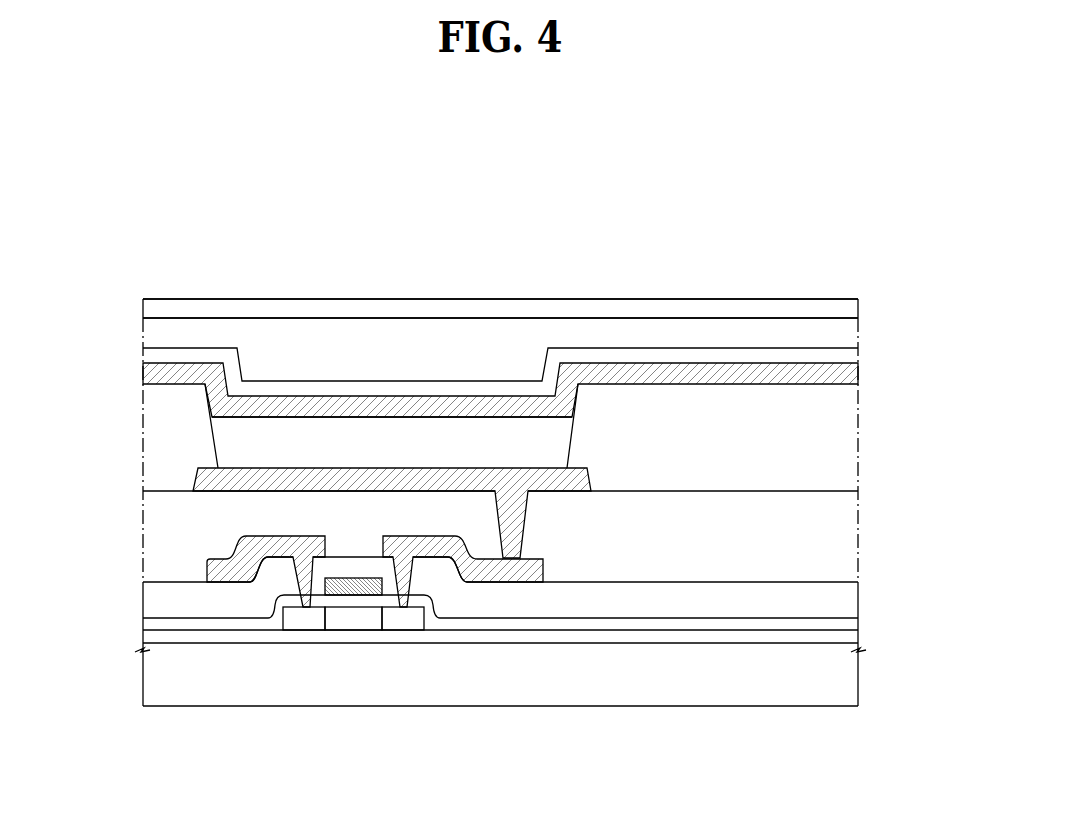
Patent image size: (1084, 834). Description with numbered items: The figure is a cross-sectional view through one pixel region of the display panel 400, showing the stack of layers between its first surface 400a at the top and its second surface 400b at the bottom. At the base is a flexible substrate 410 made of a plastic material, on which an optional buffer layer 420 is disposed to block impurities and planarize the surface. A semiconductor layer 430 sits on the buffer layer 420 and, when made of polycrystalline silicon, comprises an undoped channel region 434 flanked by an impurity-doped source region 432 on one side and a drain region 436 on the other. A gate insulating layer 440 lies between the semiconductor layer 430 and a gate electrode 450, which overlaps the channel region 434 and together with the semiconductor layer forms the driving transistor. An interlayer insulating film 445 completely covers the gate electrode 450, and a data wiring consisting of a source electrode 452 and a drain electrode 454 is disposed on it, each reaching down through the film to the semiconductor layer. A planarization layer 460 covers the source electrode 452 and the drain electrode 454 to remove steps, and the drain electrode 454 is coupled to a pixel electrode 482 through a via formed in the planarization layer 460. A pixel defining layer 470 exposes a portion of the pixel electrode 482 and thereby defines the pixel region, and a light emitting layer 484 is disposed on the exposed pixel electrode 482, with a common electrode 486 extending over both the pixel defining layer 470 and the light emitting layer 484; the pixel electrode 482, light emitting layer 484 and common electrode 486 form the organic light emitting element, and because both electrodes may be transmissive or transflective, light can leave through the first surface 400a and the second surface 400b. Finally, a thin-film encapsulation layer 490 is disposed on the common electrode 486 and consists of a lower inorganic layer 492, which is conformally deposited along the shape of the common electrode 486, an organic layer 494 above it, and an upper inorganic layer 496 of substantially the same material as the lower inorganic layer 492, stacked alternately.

The display panel 400 is at (498, 168).
The first surface 400a is at (580, 298).
The second surface 400b is at (665, 707).
The substrate 410 is at (852, 676).
The buffer layer 420 is at (852, 639).
The semiconductor layer 430 is at (354, 708).
The source region 432 is at (302, 622).
The channel region 434 is at (353, 622).
The drain region 436 is at (405, 622).
The gate insulating layer 440 is at (852, 619).
The interlayer insulating film 445 is at (852, 597).
The gate electrode 450 is at (357, 582).
The source electrode 452 is at (225, 576).
The drain electrode 454 is at (493, 576).
The planarization layer 460 is at (852, 537).
The pixel defining layer 470 is at (148, 442).
The pixel electrode 482 is at (450, 478).
The light emitting layer 484 is at (302, 438).
The common electrode 486 is at (371, 405).
The thin-film encapsulation layer 490 is at (500, 286).
The lower inorganic layer 492 is at (682, 355).
The organic layer 494 is at (727, 330).
The upper inorganic layer 496 is at (783, 305).